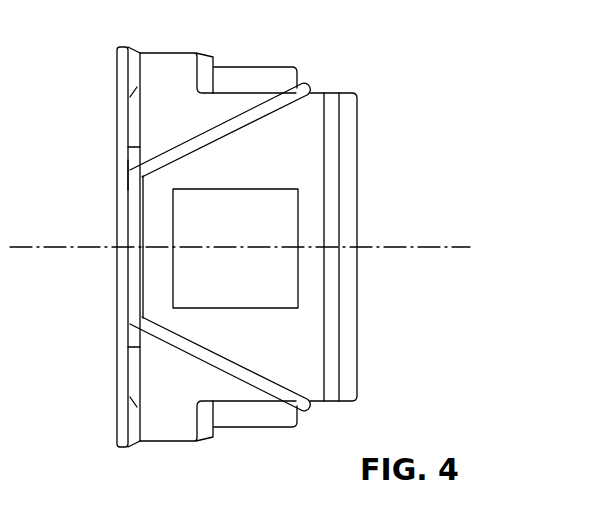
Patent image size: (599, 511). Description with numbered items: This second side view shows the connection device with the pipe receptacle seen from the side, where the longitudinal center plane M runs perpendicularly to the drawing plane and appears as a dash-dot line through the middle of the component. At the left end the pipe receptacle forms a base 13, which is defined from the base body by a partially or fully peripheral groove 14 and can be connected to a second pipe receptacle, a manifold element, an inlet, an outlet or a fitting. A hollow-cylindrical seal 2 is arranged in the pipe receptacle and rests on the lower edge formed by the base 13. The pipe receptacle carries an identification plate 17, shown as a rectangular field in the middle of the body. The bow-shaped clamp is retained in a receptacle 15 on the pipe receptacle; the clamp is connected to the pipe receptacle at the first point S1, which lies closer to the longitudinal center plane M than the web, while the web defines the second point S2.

The seal 2 is at (252, 72).
The base 13 is at (120, 160).
The groove 14 is at (135, 108).
The receptacle for the bow-shaped clamp 15 is at (135, 293).
The identification plate 17 is at (248, 231).
The first point S1 is at (124, 181).
The second point S2 is at (316, 80).
The longitudinal center plane M is at (428, 258).